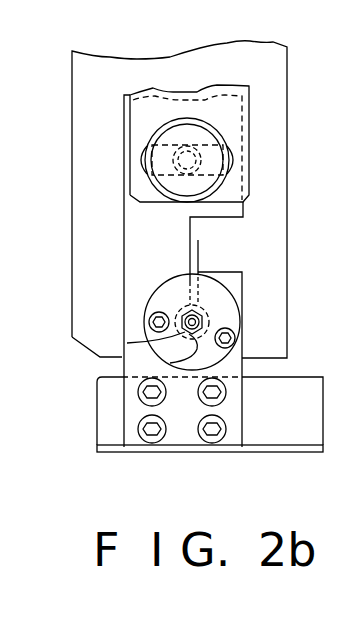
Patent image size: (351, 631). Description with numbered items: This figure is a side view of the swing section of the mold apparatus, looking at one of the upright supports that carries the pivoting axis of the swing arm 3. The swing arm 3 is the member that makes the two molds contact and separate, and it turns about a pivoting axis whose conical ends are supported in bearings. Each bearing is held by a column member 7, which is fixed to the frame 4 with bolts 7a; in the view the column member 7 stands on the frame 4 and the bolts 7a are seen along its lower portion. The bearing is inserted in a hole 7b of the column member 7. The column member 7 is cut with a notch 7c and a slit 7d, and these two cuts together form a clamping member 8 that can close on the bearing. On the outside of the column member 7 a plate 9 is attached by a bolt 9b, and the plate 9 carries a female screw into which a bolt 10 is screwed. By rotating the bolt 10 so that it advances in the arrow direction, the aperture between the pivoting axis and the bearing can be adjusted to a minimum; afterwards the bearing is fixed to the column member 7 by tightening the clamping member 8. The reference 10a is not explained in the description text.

The swing arm 3 is at (72, 120).
The frame 4 is at (259, 428).
The column member 7 is at (123, 287).
The bolts 7a is at (138, 400).
The hole 7b is at (174, 278).
The notch 7c is at (230, 242).
The slit 7d is at (194, 240).
The clamping member 8 is at (237, 272).
The plate 9 is at (225, 315).
The bolt 9b is at (236, 337).
The bolt 10 is at (170, 363).
The pivot pin 10a is at (127, 343).